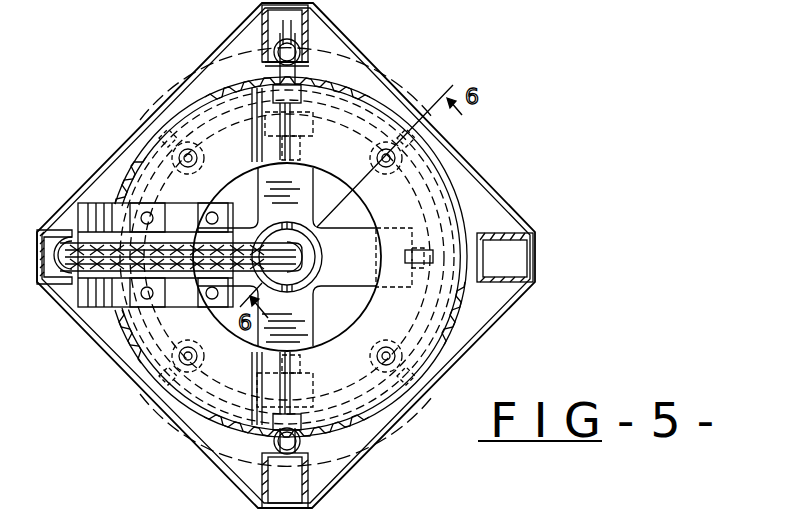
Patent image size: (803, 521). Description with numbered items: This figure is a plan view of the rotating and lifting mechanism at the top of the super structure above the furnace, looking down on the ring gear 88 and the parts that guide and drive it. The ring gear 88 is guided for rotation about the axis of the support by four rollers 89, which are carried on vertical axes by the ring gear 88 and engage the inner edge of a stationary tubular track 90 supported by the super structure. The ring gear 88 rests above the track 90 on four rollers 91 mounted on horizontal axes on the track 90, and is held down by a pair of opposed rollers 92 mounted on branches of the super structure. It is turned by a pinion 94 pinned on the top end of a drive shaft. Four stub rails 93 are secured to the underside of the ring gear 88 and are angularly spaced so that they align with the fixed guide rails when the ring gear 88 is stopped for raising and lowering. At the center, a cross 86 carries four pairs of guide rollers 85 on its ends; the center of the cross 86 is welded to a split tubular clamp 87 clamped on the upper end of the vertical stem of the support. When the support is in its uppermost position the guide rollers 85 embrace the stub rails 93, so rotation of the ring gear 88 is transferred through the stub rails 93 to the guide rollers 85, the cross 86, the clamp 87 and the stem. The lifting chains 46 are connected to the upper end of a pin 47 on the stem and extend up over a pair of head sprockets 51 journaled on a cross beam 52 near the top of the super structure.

The chains 46 is at (298, 266).
The pin 47 is at (300, 248).
The head sprockets 51 is at (235, 258).
The cross beam 52 is at (87, 207).
The guide rollers 85 is at (250, 128).
The cross 86 is at (361, 224).
The split tubular clamp 87 is at (313, 127).
The ring gear 88 is at (313, 72).
The rollers 89 is at (176, 164).
The tubular track 90 is at (172, 398).
The rollers 91 is at (150, 130).
The opposed rollers 92 is at (270, 87).
The stub rails 93 is at (262, 147).
The pinion 94 is at (303, 63).